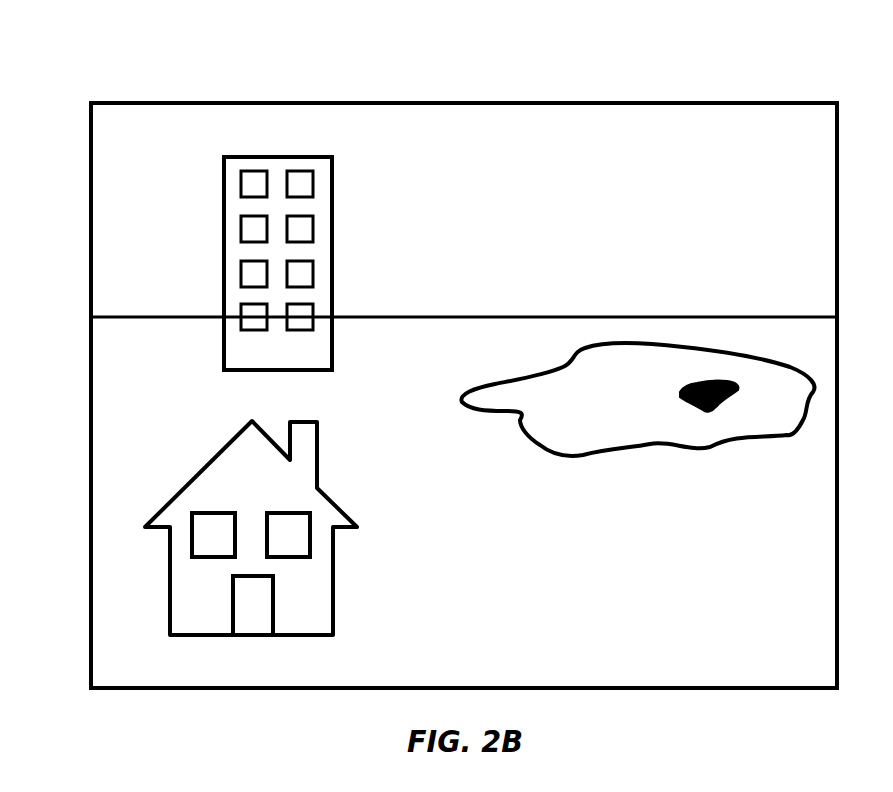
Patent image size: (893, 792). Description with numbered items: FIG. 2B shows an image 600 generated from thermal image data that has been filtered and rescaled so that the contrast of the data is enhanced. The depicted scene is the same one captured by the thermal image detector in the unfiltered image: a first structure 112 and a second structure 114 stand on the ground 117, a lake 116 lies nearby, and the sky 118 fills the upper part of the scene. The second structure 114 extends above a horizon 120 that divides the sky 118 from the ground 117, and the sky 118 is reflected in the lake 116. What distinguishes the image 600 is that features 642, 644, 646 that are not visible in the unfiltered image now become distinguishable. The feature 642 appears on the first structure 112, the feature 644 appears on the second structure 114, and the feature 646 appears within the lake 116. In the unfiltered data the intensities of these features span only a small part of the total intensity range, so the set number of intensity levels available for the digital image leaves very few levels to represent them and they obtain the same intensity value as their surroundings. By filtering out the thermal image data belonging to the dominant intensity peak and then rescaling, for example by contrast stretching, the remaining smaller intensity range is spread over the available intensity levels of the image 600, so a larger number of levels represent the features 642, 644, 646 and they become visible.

The image 600 is at (100, 68).
The sky 118 is at (712, 128).
The horizon 120 is at (127, 318).
The ground 117 is at (762, 617).
The second structure 114 is at (250, 345).
The feature 644 is at (298, 227).
The first structure 112 is at (310, 623).
The feature 642 is at (258, 610).
The lake 116 is at (570, 422).
The feature 646 is at (700, 408).